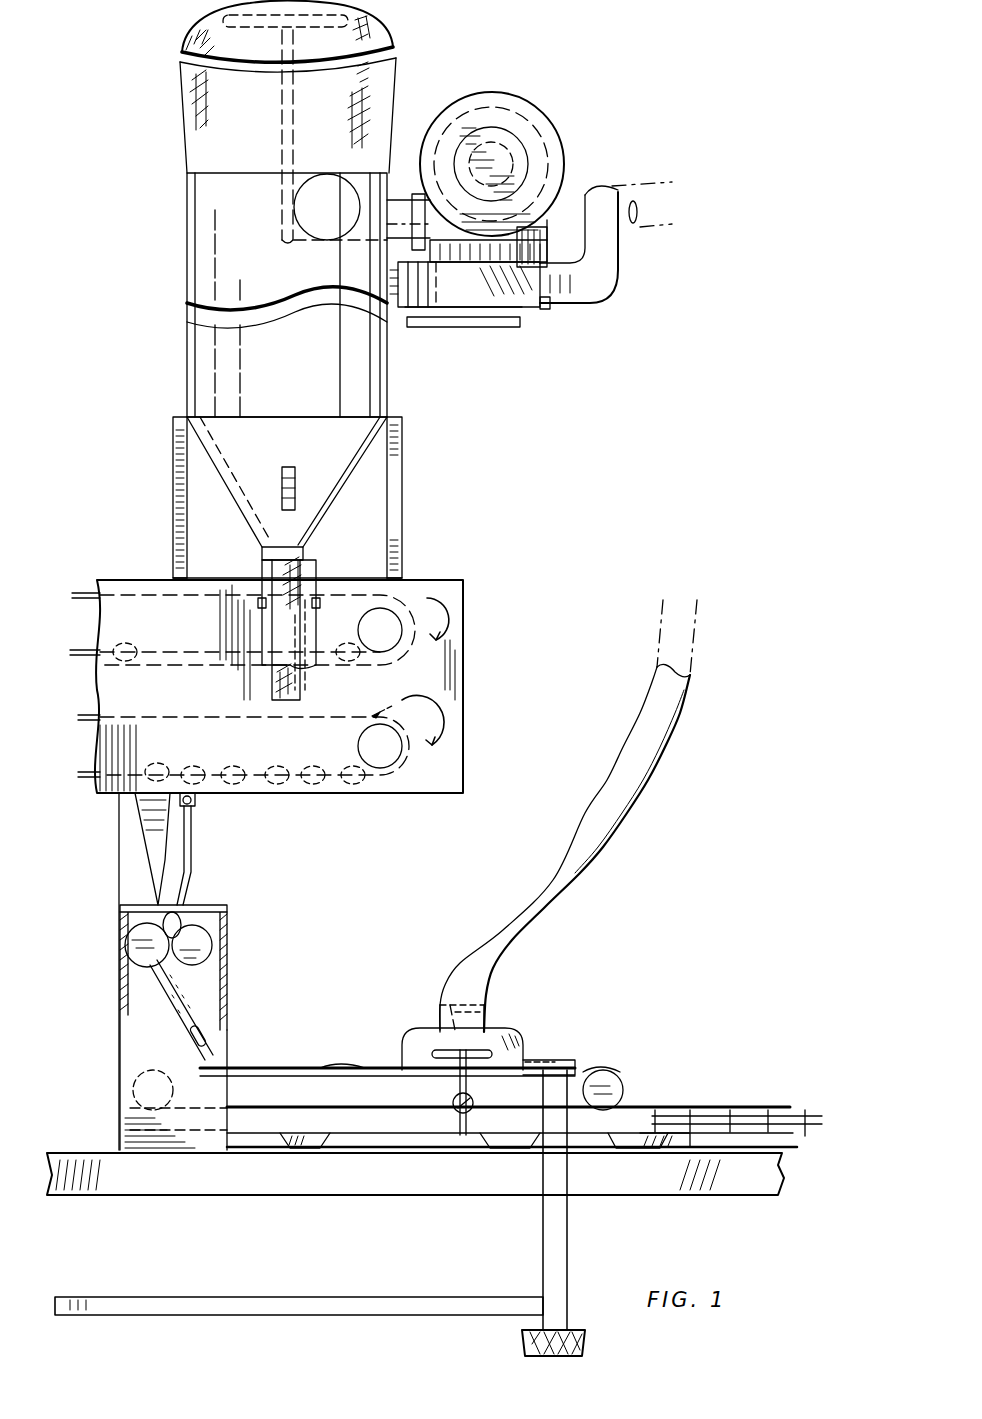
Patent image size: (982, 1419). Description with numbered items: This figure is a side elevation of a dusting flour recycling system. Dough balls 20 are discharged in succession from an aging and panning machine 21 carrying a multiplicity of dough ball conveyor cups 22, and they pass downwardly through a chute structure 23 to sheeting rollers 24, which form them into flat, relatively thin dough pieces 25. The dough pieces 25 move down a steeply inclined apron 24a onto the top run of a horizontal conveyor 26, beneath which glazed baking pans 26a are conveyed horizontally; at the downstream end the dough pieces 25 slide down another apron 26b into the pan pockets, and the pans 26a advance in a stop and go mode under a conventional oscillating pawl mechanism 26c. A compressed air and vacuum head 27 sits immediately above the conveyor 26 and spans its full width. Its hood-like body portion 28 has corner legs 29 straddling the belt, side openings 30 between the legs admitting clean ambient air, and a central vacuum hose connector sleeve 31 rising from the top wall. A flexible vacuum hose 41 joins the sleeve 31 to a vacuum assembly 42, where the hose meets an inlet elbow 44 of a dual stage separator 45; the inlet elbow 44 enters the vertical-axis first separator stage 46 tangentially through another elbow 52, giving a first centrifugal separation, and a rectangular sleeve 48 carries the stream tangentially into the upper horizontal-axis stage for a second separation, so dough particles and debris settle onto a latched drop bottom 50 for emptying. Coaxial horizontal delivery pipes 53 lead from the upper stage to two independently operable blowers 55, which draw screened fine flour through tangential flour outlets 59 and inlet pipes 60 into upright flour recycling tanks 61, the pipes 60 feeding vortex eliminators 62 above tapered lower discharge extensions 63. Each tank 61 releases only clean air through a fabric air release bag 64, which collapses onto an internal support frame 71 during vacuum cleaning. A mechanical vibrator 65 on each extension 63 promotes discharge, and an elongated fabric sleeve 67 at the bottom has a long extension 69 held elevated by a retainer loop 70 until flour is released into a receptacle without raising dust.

The dough balls 20 is at (190, 822).
The aging and panning machine 21 is at (382, 703).
The dough ball conveyor cups 22 is at (140, 764).
The chute structure 23 is at (150, 822).
The sheeting rollers 24 is at (185, 945).
The steeply inclined apron 24a is at (168, 1000).
The dough pieces 25 is at (340, 1066).
The horizontal conveyor 26 is at (373, 1066).
The baking pans 26a is at (275, 1140).
The apron 26b is at (632, 1103).
The oscillating pawl mechanism 26c is at (745, 1112).
The compressed air and vacuum head 27 is at (520, 1030).
The hood-like body portion 28 is at (420, 1040).
The corner legs 29 is at (522, 1068).
The side openings 30 is at (436, 1075).
The vacuum hose connector sleeve 31 is at (448, 1002).
The flexible vacuum hose 41 is at (610, 828).
The vacuum assembly 42 is at (543, 105).
The inlet elbow 44 is at (600, 300).
The dual stage separator 45 is at (496, 302).
The first separator stage 46 is at (468, 330).
The rectangular sleeve 48 is at (468, 258).
The drop bottom 50 is at (440, 330).
The elbow 52 is at (548, 312).
The horizontal delivery pipes 53 is at (510, 157).
The blowers 55 is at (560, 172).
The tangential flour outlets 59 is at (455, 258).
The inlet pipes 60 is at (404, 198).
The flour recycling tanks 61 is at (187, 293).
The vortex eliminators 62 is at (313, 237).
The tapered lower discharge extensions 63 is at (232, 452).
The fabric air release bag 64 is at (383, 37).
The mechanical vibrator 65 is at (295, 488).
The fabric sleeve 67 is at (255, 630).
The extension 69 is at (272, 680).
The retainer loop 70 is at (270, 580).
The support frame 71 is at (282, 96).